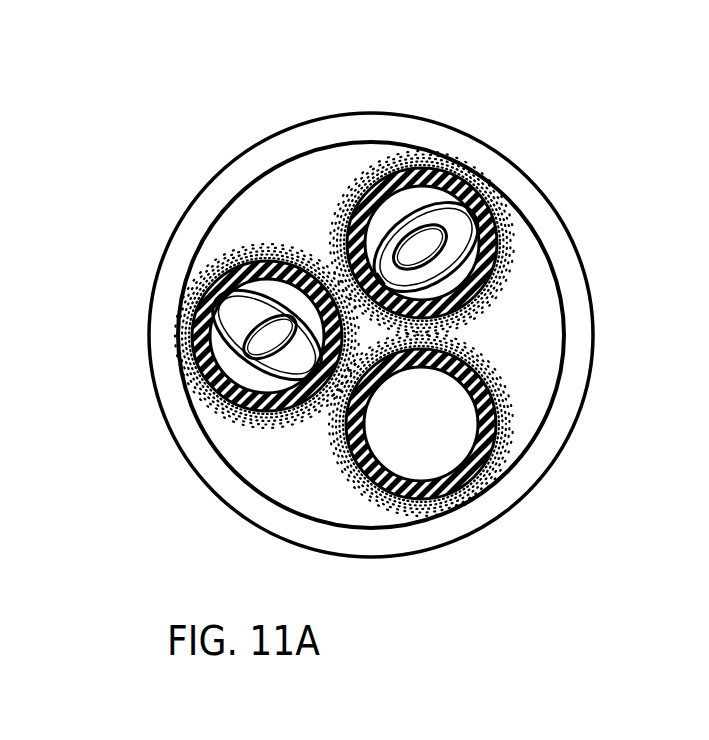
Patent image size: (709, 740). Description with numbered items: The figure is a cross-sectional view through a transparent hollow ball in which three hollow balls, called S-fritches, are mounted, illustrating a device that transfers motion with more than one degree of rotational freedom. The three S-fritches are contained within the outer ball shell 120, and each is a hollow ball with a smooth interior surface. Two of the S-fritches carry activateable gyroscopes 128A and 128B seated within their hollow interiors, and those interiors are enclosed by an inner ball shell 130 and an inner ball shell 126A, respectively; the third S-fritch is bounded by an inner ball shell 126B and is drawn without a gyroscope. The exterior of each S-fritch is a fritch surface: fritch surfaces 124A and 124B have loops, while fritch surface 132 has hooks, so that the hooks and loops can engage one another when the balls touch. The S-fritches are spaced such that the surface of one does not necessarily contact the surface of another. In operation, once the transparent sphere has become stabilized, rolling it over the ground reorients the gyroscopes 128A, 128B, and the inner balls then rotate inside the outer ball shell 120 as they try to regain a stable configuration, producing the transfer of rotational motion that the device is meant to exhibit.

The outer ball shell 120 is at (414, 335).
The fritch surface 124A is at (474, 222).
The inner ball shell 126A is at (450, 243).
The activateable gyroscope 128A is at (426, 169).
The fritch surface 124B is at (492, 424).
The inner ball shell 126B is at (415, 452).
The activateable gyroscope 128B is at (250, 415).
The inner ball shell 130 is at (180, 362).
The fritch surface 132 is at (203, 336).